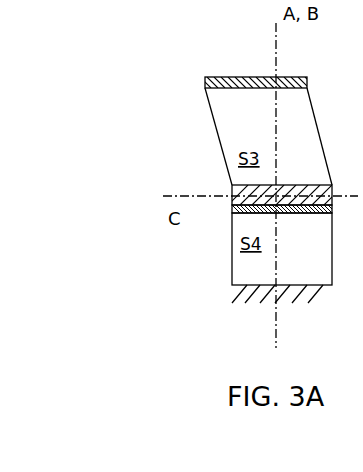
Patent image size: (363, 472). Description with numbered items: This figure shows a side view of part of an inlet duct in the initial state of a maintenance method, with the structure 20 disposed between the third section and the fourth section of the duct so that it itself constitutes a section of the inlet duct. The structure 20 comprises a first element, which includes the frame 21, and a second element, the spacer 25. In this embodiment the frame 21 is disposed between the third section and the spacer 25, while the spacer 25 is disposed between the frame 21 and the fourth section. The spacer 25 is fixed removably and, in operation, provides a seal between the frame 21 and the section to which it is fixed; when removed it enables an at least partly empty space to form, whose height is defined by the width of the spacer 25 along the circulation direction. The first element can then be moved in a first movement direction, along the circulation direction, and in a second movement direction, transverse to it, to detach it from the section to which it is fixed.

The structure 20 is at (160, 148).
The frame 21 is at (232, 190).
The spacer 25 is at (232, 209).